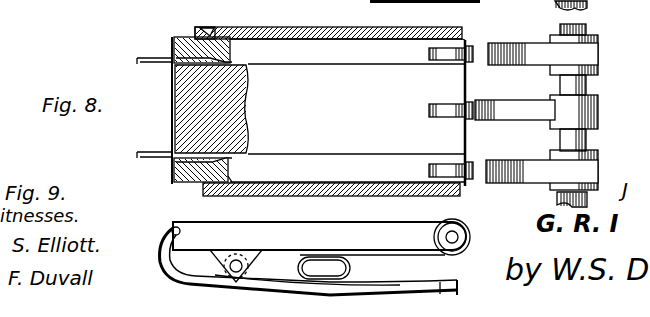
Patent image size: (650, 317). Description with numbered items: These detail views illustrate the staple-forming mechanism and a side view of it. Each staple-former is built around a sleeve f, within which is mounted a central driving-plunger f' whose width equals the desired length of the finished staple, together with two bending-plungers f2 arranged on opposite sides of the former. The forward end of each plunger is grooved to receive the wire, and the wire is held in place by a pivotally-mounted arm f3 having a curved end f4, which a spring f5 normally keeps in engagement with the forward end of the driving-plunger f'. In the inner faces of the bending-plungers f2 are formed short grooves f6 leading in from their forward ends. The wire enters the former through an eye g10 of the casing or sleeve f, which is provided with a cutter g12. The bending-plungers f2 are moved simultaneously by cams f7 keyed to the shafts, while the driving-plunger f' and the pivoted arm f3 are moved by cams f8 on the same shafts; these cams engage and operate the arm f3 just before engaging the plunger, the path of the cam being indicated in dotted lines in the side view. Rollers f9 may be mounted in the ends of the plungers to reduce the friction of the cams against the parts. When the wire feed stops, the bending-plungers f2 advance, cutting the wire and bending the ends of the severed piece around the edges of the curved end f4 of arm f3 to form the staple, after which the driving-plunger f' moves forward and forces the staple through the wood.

In FIG. 8, the sleeve f is at (330, 22).
In FIG. 8, the central driving-plunger f' is at (301, 111).
In FIG. 9, the central driving-plunger f' is at (319, 227).
In FIG. 8, the bending-plungers f2 is at (334, 117).
In FIG. 9, the pivotally-mounted arm f3 is at (195, 272).
In FIG. 9, the curved end f4 is at (170, 232).
In FIG. 9, the spring f5 is at (324, 267).
In FIG. 8, the short grooves f6 is at (228, 58).
In FIG. 8, the cams f7 is at (522, 165).
In FIG. 8, the cams f8 is at (515, 108).
In FIG. 8, the rollers f9 is at (455, 55).
In FIG. 9, the rollers f9 is at (470, 240).
In FIG. 8, the eye g10 is at (195, 28).
In FIG. 8, the cutter g12 is at (207, 28).